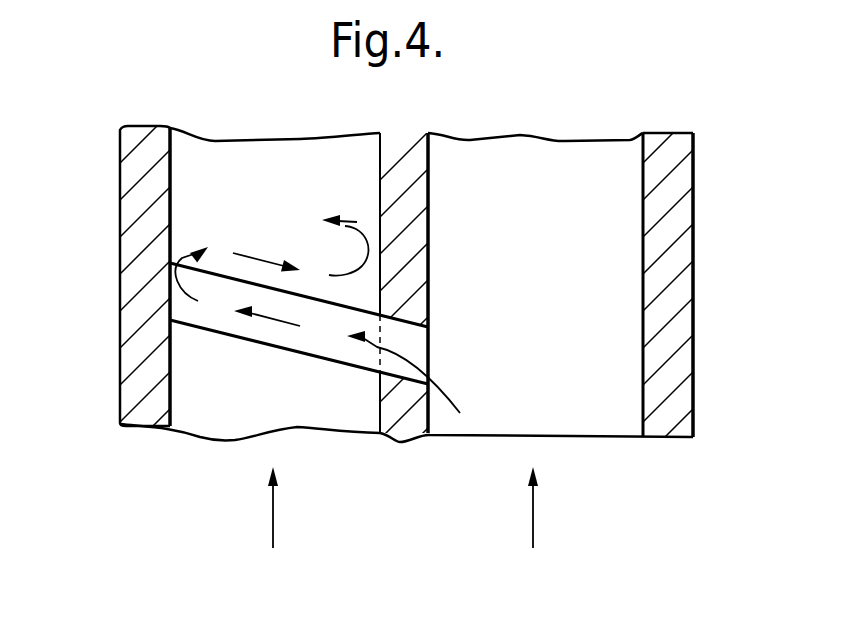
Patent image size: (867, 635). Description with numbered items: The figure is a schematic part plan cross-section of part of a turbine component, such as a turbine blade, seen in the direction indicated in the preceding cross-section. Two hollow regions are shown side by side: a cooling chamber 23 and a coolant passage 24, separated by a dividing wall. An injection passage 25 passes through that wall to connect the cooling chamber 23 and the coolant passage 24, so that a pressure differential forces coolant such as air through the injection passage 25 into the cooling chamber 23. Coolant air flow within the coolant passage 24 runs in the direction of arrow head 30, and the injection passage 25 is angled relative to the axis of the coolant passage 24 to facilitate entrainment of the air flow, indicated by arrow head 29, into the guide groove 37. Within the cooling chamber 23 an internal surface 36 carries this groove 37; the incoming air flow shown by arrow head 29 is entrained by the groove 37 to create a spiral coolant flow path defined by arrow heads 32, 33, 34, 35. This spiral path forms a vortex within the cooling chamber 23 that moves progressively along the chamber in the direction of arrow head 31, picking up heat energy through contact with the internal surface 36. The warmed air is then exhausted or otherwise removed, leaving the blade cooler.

The cooling chamber 23 is at (261, 193).
The coolant passage 24 is at (521, 233).
The injection passage 25 is at (415, 340).
The arrow head 29 is at (407, 358).
The arrow head 30 is at (534, 525).
The arrow head 31 is at (274, 525).
The arrow head 32 is at (279, 319).
The arrow head 33 is at (168, 277).
The arrow head 34 is at (253, 253).
The arrow head 35 is at (356, 222).
The internal surface 36 is at (170, 195).
The groove 37 is at (225, 311).